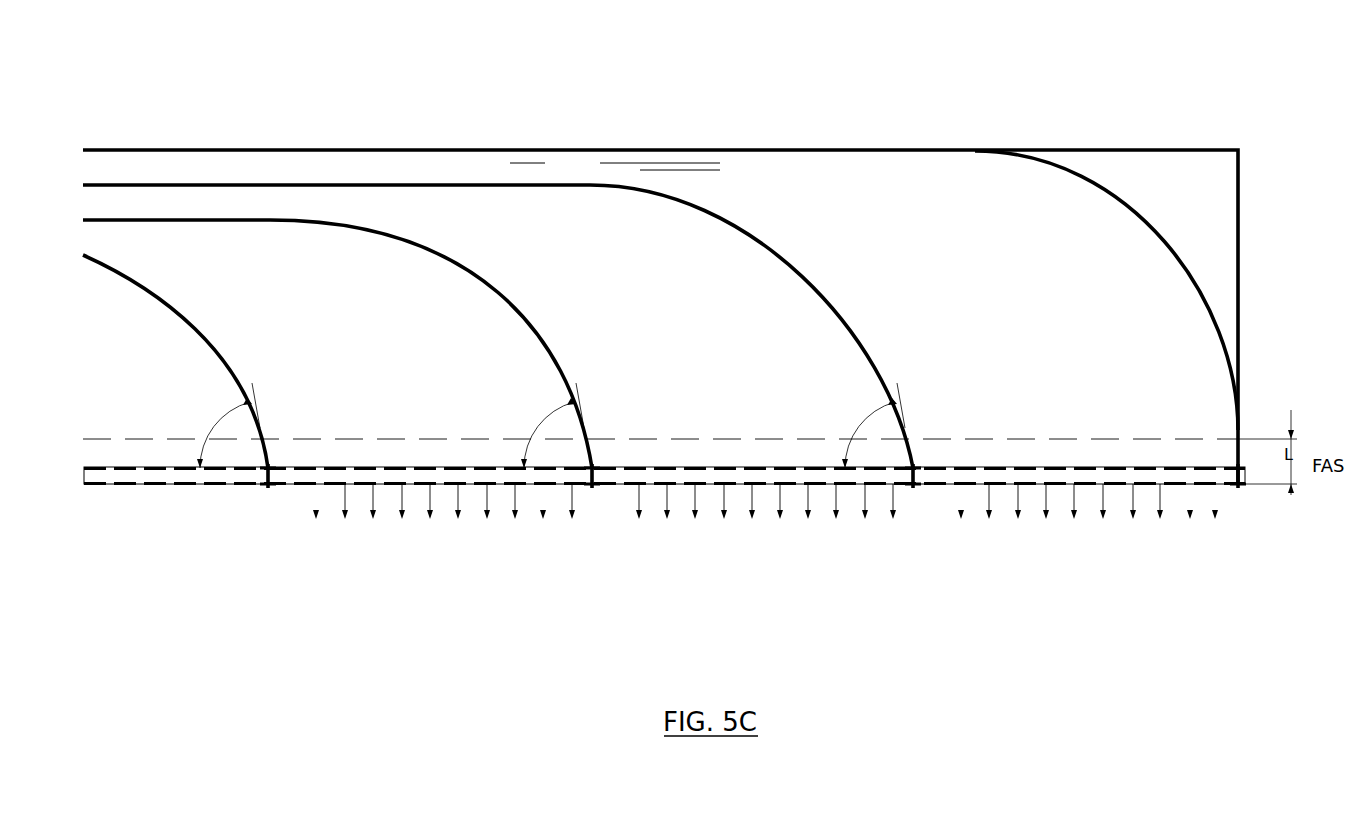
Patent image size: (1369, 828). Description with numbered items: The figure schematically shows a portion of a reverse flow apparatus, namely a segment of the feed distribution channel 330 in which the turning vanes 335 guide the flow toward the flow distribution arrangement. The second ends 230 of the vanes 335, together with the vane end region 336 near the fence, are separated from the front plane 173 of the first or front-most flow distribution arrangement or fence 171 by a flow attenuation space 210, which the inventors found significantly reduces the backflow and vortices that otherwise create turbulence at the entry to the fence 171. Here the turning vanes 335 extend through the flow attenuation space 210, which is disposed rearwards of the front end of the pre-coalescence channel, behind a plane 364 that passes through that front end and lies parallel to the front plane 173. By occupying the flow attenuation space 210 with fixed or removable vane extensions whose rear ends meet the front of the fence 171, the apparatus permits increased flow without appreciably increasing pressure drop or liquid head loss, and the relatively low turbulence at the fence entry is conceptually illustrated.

The feed distribution channel 330 is at (1196, 149).
The turning vanes 335 is at (849, 330).
The second ends of vanes 230 is at (908, 432).
The vane outlet end 336 is at (912, 452).
The flow attenuation space 210 is at (1048, 452).
The plane 364 is at (111, 437).
The first or front-most flow distribution arrangement or fence 171 is at (1006, 476).
The front plane 173 is at (1131, 470).